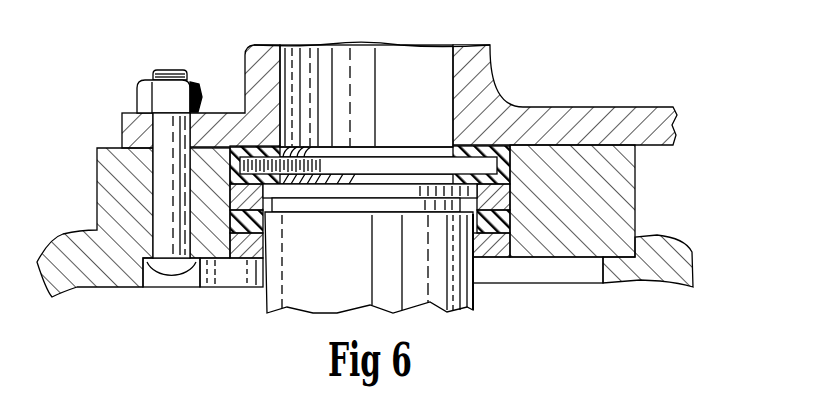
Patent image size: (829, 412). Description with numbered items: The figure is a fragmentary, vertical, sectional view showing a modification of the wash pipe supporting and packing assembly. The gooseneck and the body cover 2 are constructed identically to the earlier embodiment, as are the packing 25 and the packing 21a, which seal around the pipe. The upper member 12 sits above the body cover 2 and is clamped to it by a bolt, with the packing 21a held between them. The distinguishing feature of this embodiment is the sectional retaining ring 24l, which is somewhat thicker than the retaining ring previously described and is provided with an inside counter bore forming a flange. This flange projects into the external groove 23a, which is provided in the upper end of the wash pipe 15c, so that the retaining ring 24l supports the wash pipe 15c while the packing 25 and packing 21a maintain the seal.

The body cover 2 is at (56, 248).
The upper member 12 is at (492, 52).
The packing 21a is at (238, 147).
The external groove 23a is at (337, 210).
The bearing block 24l is at (510, 193).
The packing 25 is at (247, 240).
The wash pipe 15c is at (474, 306).